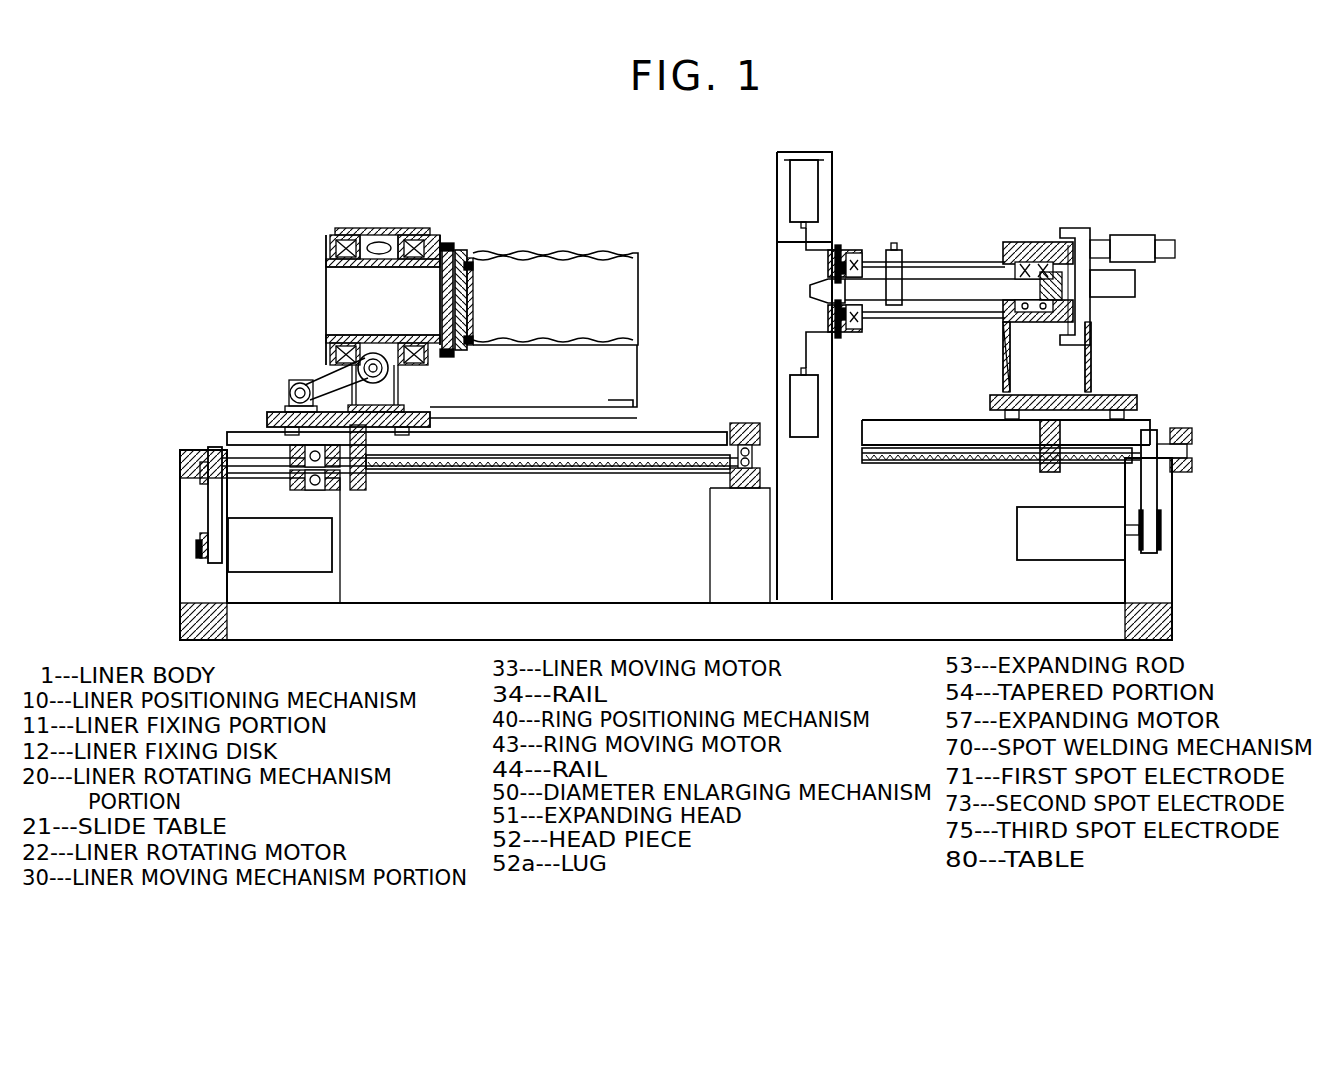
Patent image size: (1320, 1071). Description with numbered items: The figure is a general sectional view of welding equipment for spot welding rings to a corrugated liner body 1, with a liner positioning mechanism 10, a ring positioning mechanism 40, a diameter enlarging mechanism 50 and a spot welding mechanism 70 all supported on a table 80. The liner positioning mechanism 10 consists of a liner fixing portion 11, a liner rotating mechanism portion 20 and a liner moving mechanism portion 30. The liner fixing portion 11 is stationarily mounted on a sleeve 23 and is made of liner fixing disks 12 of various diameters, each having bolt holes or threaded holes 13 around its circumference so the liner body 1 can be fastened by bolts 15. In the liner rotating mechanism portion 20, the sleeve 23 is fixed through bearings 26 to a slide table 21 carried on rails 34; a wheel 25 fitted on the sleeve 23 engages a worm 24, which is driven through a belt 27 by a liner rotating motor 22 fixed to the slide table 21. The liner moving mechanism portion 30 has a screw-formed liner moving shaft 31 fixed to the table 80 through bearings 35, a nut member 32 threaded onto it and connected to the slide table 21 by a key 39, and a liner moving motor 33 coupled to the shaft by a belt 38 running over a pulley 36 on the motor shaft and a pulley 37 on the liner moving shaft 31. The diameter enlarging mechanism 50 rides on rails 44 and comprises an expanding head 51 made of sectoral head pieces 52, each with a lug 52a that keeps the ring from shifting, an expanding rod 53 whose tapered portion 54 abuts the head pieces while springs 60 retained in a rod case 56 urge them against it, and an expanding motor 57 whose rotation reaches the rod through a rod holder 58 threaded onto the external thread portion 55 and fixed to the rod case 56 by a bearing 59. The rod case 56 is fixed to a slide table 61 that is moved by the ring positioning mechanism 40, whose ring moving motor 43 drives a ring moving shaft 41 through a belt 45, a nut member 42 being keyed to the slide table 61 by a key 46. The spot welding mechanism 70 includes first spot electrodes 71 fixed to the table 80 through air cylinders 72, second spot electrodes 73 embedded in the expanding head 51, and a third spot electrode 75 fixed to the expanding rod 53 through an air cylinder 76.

The liner body 1 is at (545, 253).
The liner positioning mechanism 10 is at (347, 278).
The liner fixing portion 11 is at (507, 285).
The liner fixing disk 12 is at (452, 352).
The bolt holes or threaded holes 13 is at (448, 250).
The bolt 15 is at (462, 252).
The liner rotating mechanism portion 20 is at (322, 293).
The slide table 21 is at (290, 412).
The liner rotating motor 22 is at (296, 383).
The sleeve 23 is at (326, 266).
The worm 24 is at (400, 378).
The wheel 25 is at (378, 244).
The bearing 26 is at (333, 240).
The belt 27 is at (340, 368).
The liner moving mechanism portion 30 is at (445, 500).
The liner moving shaft 31 is at (558, 470).
The nut member 32 is at (360, 490).
The liner moving motor 33 is at (335, 570).
The rail 34 is at (658, 432).
The bearing 35 is at (320, 492).
The pulley 36 is at (205, 556).
The pulley 37 is at (208, 450).
The belt 38 is at (205, 505).
The key 39 is at (420, 472).
The ring positioning mechanism 40 is at (1045, 492).
The ring moving shaft 41 is at (1000, 452).
The nut member 42 is at (1040, 450).
The ring moving motor 43 is at (1050, 560).
The rail 44 is at (1148, 422).
The belt 45 is at (1160, 490).
The key 46 is at (1052, 472).
The diameter enlarging mechanism 50 is at (950, 267).
The expanding head 51 is at (816, 255).
The head piece 52 is at (828, 262).
The lug 52a is at (846, 250).
The expanding rod 53 is at (968, 278).
The tapered portion 54 is at (812, 288).
The external thread portion 55 is at (1072, 300).
The rod case 56 is at (1020, 242).
The expanding motor 57 is at (1125, 235).
The rod holder 58 is at (1078, 235).
The bearing 59 is at (1045, 250).
The spring 60 is at (852, 253).
The slide table 61 is at (1118, 395).
The spot welding mechanism 70 is at (814, 357).
The first spot electrode 71 is at (806, 238).
The air cylinder 72 is at (790, 176).
The second spot electrode 73 is at (838, 245).
The third spot electrode 75 is at (914, 218).
The air cylinder 76 is at (890, 245).
The table 80 is at (176, 478).